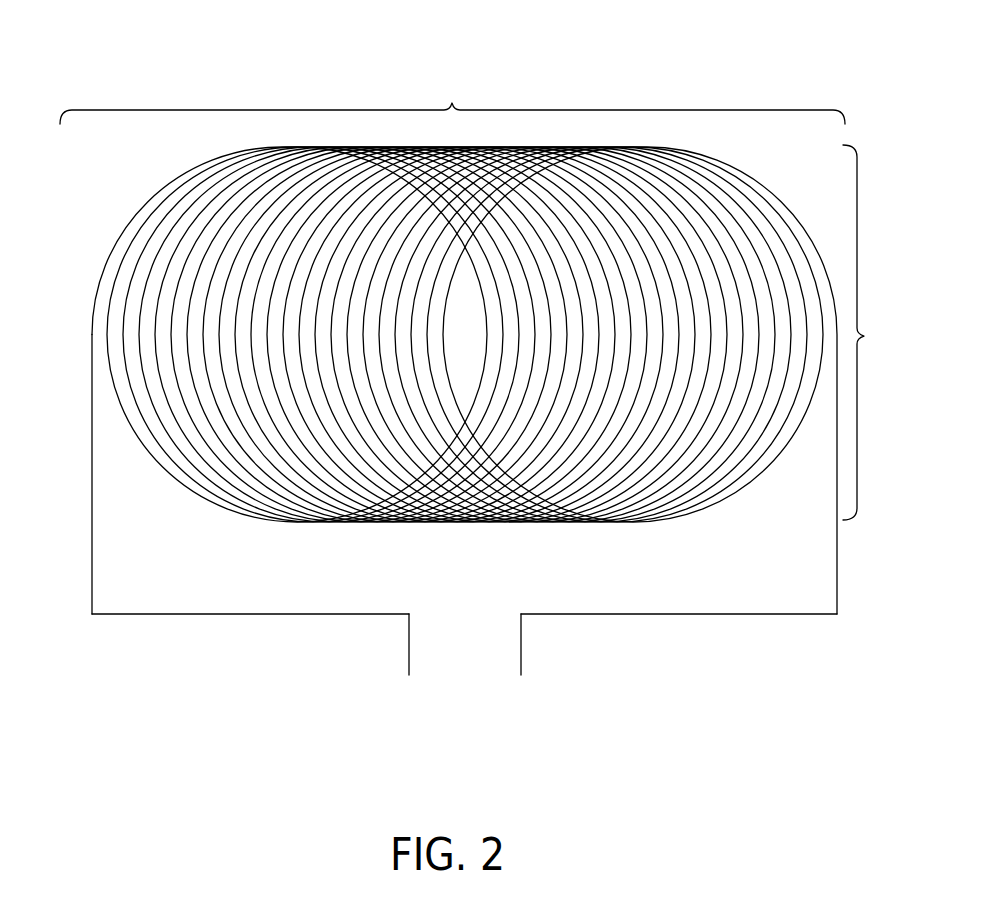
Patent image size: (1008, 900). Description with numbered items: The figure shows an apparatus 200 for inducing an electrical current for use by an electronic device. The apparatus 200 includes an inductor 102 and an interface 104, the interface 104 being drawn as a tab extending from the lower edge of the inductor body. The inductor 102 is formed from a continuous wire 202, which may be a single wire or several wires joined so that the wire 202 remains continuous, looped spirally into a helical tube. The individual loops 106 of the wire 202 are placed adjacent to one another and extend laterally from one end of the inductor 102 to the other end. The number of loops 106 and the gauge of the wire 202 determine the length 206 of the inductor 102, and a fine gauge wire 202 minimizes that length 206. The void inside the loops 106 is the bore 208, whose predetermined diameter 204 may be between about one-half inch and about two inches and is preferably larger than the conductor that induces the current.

The apparatus 200 is at (147, 56).
The continuous wire 202 is at (92, 522).
The predetermined diameter 204 is at (872, 332).
The length 206 is at (452, 98).
The bore 208 is at (109, 410).
The inductor 102 is at (172, 515).
The interface 104 is at (436, 718).
The loops 106 is at (141, 210).